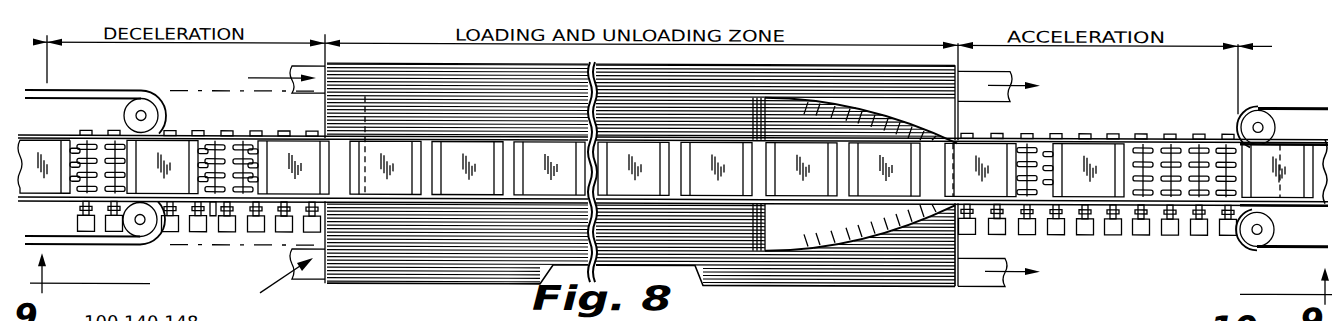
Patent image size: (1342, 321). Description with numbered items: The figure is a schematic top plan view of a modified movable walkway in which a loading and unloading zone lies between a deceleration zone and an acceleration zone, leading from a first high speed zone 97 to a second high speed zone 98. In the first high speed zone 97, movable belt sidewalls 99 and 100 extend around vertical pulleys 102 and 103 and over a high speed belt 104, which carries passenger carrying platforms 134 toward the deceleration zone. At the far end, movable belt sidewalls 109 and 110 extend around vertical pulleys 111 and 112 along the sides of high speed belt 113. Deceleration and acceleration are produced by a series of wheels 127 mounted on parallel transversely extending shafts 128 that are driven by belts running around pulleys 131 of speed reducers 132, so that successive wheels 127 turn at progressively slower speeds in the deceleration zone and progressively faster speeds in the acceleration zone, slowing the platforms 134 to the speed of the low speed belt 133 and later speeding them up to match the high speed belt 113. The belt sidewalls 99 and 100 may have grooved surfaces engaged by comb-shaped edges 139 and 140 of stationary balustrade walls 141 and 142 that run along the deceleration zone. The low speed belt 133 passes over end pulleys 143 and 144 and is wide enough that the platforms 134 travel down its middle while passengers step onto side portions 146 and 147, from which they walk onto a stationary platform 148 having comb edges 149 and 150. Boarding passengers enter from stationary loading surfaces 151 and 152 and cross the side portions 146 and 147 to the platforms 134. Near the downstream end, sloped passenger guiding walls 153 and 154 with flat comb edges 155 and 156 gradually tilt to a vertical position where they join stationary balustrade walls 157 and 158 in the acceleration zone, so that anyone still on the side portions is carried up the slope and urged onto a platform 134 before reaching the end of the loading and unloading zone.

The first high speed zone 97 is at (29, 57).
The second high speed zone 98 is at (1268, 76).
The movable belt sidewall 99 is at (73, 95).
The movable belt sidewall 100 is at (96, 240).
The vertical pulley 102 is at (133, 104).
The vertical pulley 103 is at (140, 234).
The high speed belt 104 is at (14, 140).
The movable belt sidewall 109 is at (1302, 101).
The movable belt sidewall 110 is at (1297, 244).
The vertical pulley 111 is at (1254, 238).
The vertical pulley 112 is at (1275, 123).
The high speed belt 113 is at (1322, 200).
The wheels 127 is at (215, 140).
The transversely extending shafts 128 is at (236, 145).
The pulley 131 is at (1163, 216).
The speed reducer 132 is at (232, 232).
The low speed belt 133 is at (710, 243).
The passenger carrying platforms 134 is at (390, 146).
The comb-shaped edge 139 is at (163, 127).
The comb-shaped edge 140 is at (166, 228).
The stationary balustrade wall 141 is at (272, 134).
The stationary balustrade wall 142 is at (213, 208).
The end pulley 143 is at (367, 233).
The end pulley 144 is at (913, 247).
The side portion 146 is at (445, 103).
The side portion 147 is at (430, 240).
The stationary platform 148 is at (1007, 64).
The comb edge 149 is at (962, 80).
The comb edge 150 is at (964, 284).
The stationary loading surface 151 is at (310, 279).
The stationary loading surface 152 is at (306, 62).
The sloped passenger guiding wall 153 is at (856, 108).
The sloped passenger guiding wall 154 is at (826, 236).
The flat comb edge 155 is at (768, 110).
The flat comb edge 156 is at (770, 240).
The stationary balustrade wall 157 is at (1040, 134).
The stationary balustrade wall 158 is at (1104, 208).